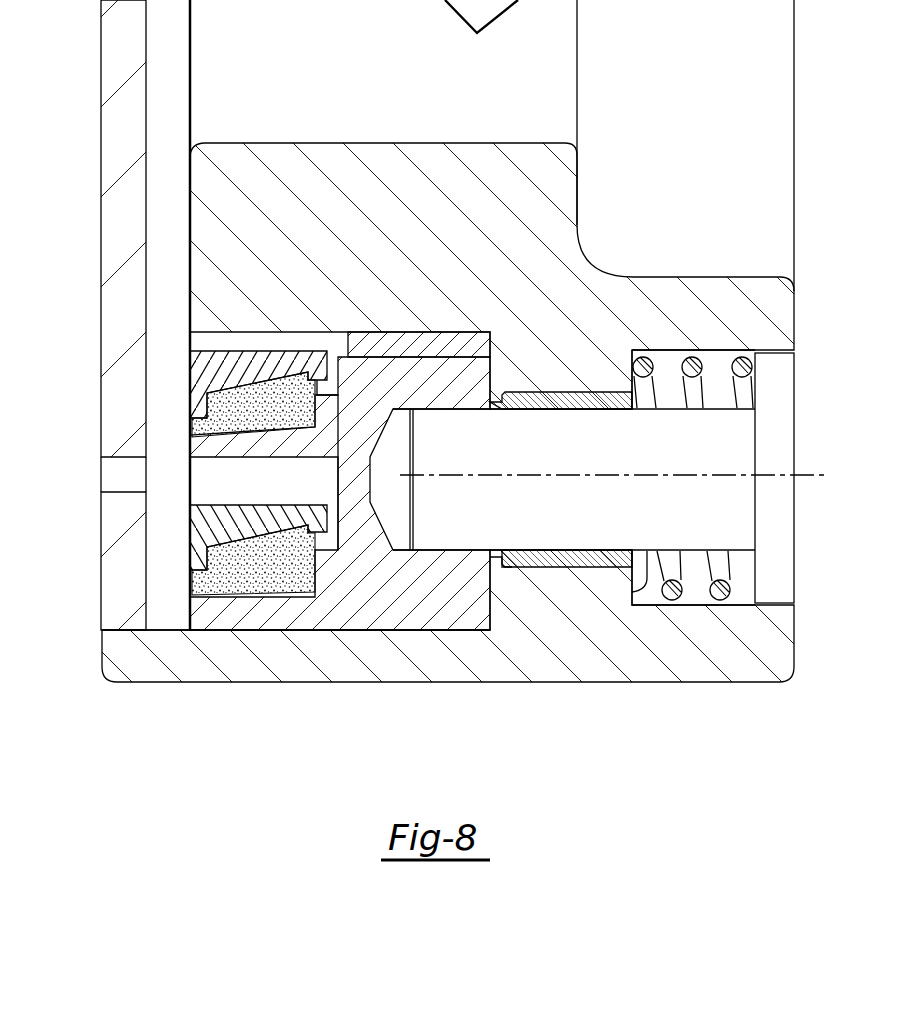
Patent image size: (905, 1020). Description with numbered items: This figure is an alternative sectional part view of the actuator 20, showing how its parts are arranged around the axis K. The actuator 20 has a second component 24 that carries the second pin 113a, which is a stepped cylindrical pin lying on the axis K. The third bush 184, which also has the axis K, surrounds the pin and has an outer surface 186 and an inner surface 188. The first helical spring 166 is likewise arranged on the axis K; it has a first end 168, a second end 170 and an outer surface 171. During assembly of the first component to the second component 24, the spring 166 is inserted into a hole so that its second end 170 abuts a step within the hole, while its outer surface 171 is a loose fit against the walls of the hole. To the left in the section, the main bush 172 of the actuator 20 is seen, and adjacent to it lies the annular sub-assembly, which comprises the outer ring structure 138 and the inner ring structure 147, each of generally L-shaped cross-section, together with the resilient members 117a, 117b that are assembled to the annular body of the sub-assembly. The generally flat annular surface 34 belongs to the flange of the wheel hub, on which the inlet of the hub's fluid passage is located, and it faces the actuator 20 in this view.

The actuator 20 is at (628, 112).
The second component 24 is at (378, 632).
The generally flat annular surface 34 is at (145, 566).
The second pin 113a is at (673, 587).
The resilient member 117a is at (256, 576).
The resilient member 117b is at (258, 398).
The outer ring structure 138 is at (225, 513).
The inner ring structure 147 is at (205, 371).
The first helical spring 166 is at (696, 392).
The first end 168 is at (738, 348).
The second end 170 is at (636, 348).
The outer surface 171 is at (705, 608).
The main bush 172 is at (426, 333).
The third bush 184 is at (580, 407).
The outer surface 186 is at (540, 565).
The inner surface 188 is at (578, 563).
The axis K is at (628, 476).